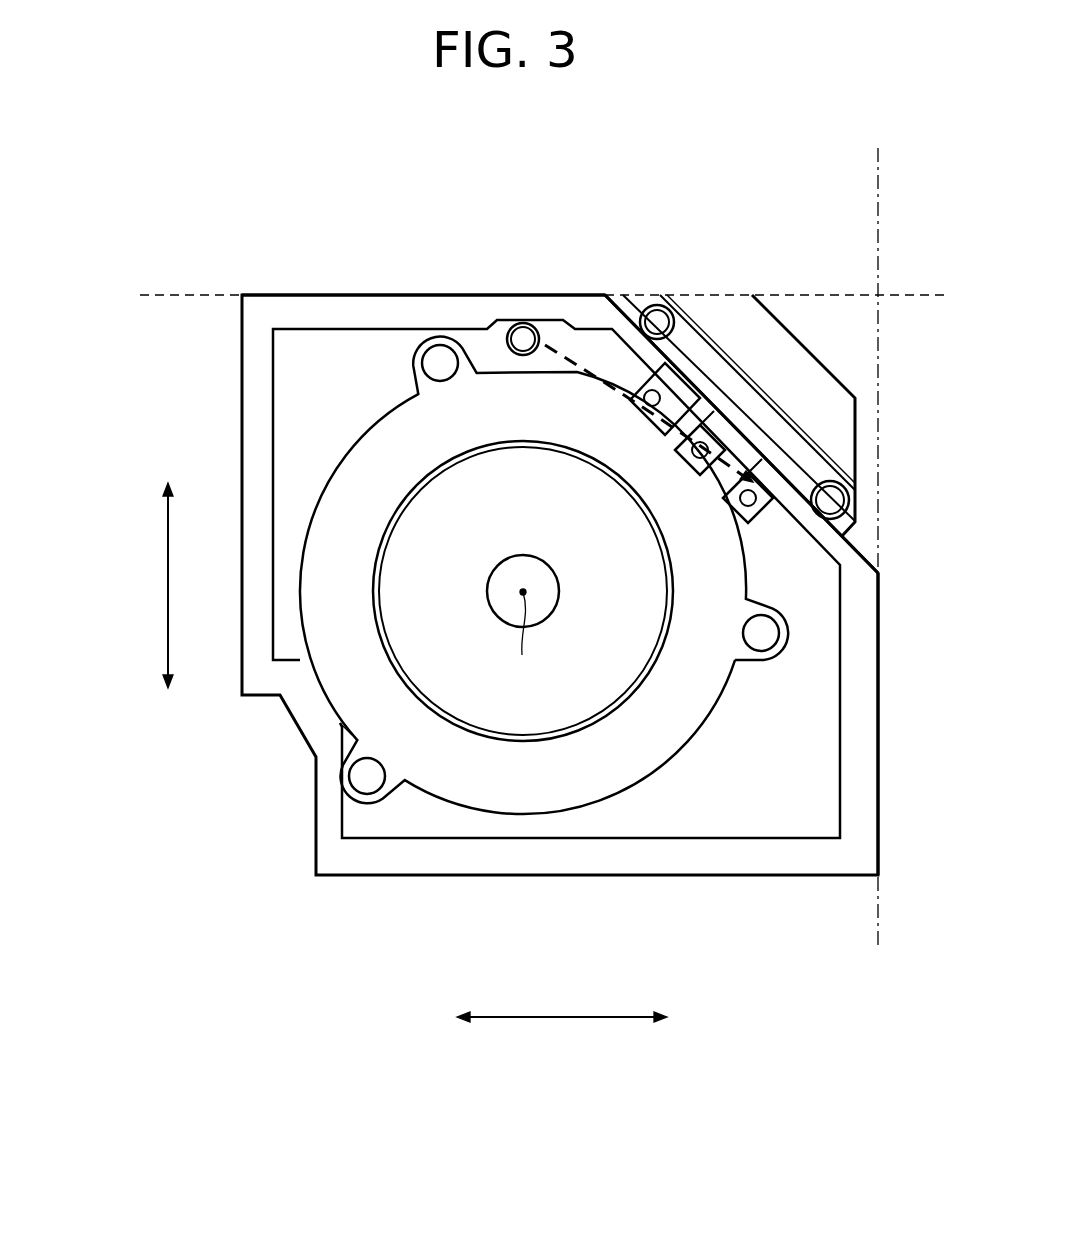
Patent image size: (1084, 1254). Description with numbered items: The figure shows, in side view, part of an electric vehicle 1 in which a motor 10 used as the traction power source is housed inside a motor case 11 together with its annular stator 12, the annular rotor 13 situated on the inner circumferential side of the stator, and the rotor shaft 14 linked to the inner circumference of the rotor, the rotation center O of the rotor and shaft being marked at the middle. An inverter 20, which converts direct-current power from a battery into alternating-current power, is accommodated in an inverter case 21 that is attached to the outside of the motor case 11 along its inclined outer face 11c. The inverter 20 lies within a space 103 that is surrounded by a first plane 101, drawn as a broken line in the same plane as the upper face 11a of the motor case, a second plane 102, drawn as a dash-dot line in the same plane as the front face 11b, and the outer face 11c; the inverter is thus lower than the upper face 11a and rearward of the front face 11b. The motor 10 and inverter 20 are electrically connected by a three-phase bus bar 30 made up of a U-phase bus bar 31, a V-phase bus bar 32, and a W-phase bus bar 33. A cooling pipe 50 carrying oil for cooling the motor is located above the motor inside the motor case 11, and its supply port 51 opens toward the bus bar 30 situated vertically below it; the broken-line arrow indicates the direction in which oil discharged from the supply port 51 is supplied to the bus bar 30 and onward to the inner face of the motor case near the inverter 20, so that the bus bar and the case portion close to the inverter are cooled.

The electric vehicle 1 is at (650, 171).
The motor 10 is at (413, 276).
The motor case 11 is at (293, 289).
The upper face of the motor case 11a is at (350, 295).
The front face of the motor case 11b is at (879, 812).
The outer face of the motor case 11c is at (856, 548).
The stator 12 is at (385, 453).
The rotor 13 is at (410, 652).
The rotor shaft 14 is at (487, 607).
The inverter 20 is at (728, 276).
The inverter case 21 is at (675, 295).
The bus bar 30 is at (805, 926).
The U-phase bus bar 31 is at (648, 410).
The V-phase bus bar 32 is at (697, 462).
The W-phase bus bar 33 is at (750, 515).
The cooling pipe 50 is at (516, 313).
The supply port 51 is at (552, 333).
The first plane 101 is at (822, 293).
The second plane 102 is at (880, 450).
The space 103 is at (862, 340).